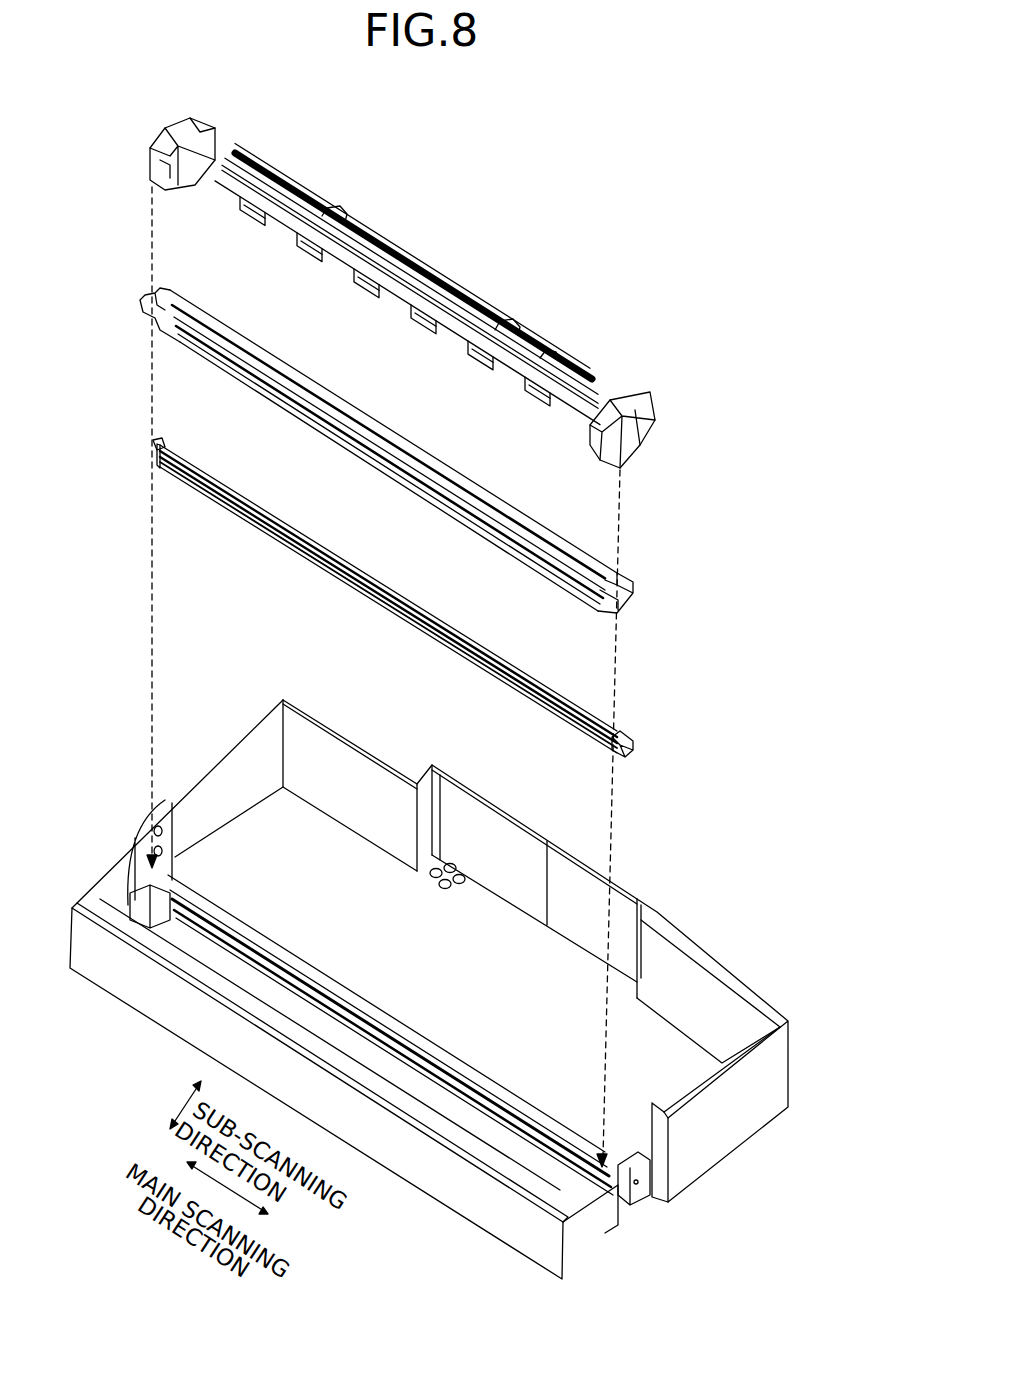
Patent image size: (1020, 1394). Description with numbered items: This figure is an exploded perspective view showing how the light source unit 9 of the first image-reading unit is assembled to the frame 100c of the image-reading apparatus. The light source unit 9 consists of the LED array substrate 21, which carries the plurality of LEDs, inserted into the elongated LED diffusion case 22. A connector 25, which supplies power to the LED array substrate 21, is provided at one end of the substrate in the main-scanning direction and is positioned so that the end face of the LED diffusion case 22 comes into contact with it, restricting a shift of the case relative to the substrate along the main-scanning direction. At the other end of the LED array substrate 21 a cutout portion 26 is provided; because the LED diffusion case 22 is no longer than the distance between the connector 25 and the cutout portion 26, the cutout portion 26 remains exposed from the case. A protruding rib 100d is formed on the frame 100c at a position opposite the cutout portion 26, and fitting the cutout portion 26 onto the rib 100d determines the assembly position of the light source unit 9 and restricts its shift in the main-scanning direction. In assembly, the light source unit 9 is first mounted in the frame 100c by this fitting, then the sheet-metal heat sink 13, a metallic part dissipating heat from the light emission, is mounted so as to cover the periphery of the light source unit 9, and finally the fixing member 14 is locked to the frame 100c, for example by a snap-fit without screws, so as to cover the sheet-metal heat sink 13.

The light source unit 9 is at (677, 735).
The sheet-metal heat sink 13 is at (688, 595).
The fixing member 14 is at (687, 427).
The LED array substrate 21 is at (153, 446).
The LED diffusion case 22 is at (367, 570).
The connector 25 is at (624, 740).
The cutout portion 26 is at (161, 444).
The frame 100c is at (742, 1140).
The rib 100d is at (148, 880).